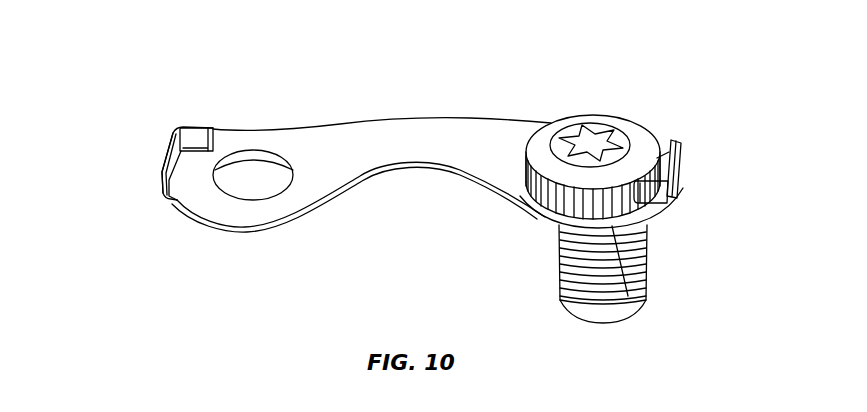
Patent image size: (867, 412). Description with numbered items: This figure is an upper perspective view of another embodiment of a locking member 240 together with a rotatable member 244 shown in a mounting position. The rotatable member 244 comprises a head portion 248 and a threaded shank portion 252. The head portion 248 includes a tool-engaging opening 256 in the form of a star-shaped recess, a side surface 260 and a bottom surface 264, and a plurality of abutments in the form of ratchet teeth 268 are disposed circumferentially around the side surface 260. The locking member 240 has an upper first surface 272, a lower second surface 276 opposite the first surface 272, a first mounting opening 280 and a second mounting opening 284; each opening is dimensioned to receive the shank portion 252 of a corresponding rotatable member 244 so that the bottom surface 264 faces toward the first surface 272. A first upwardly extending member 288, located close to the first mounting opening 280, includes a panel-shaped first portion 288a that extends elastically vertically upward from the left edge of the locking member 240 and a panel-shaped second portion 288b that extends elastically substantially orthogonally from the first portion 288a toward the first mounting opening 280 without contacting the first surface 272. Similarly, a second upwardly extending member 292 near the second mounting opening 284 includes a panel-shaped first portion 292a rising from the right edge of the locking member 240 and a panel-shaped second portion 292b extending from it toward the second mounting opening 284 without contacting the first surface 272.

The locking member 240 is at (359, 160).
The rotatable member 244 is at (611, 179).
The head portion 248 is at (603, 127).
The threaded shank portion 252 is at (642, 260).
The tool-engaging opening 256 is at (583, 133).
The side surface 260 is at (508, 169).
The bottom surface 264 is at (545, 210).
The ratchet teeth 268 is at (643, 123).
The first surface 272 is at (342, 137).
The second surface 276 is at (342, 188).
The first mounting opening 280 is at (252, 167).
The second mounting opening 284 is at (555, 238).
The first upwardly extending member 288 is at (124, 141).
The first portion 288a is at (157, 190).
The second portion 288b is at (190, 128).
The second upwardly extending member 292 is at (726, 161).
The first portion 292a is at (683, 147).
The second portion 292b is at (657, 195).